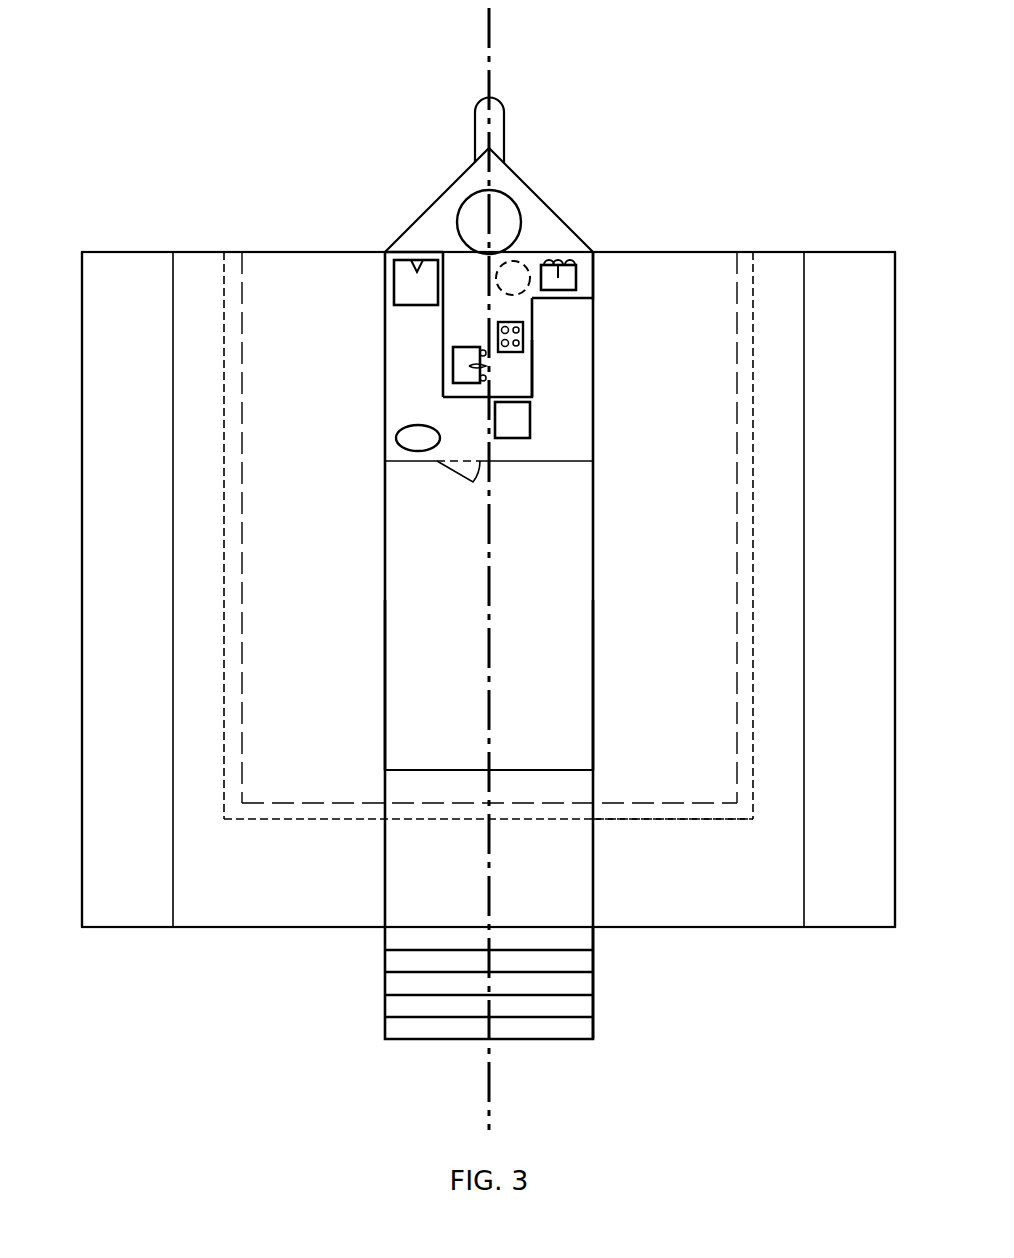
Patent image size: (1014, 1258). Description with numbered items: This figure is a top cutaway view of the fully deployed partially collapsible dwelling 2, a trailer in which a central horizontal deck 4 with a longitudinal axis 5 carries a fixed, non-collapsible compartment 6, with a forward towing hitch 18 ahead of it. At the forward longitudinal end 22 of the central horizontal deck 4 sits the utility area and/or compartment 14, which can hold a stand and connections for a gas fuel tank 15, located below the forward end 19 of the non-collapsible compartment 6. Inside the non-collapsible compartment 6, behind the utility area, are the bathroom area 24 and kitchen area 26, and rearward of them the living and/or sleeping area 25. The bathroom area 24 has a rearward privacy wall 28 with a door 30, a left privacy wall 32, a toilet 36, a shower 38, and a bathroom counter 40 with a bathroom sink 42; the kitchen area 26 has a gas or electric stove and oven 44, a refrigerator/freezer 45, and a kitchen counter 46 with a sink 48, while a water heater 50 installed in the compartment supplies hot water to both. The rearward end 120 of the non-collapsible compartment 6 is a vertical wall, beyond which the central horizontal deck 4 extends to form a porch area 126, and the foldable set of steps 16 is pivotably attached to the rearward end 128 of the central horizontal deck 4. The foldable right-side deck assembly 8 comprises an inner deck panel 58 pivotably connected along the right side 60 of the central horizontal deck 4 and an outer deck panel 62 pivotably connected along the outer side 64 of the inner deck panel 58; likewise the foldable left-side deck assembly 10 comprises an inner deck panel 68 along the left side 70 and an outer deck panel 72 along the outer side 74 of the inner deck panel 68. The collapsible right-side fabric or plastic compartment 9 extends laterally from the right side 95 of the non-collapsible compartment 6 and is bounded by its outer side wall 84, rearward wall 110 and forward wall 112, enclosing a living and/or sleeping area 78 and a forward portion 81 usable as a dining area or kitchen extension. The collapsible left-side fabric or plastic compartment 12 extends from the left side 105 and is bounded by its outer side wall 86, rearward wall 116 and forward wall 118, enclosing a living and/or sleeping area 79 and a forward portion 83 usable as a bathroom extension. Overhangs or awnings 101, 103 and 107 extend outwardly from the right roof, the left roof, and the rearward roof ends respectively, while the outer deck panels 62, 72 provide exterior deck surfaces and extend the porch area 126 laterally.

The partially collapsible dwelling 2 is at (774, 146).
The central horizontal deck 4 is at (540, 605).
The longitudinal axis 5 is at (487, 22).
The non-collapsible compartment 6 is at (385, 565).
The foldable right-side deck assembly 8 is at (895, 590).
The collapsible right-side fabric or plastic compartment 9 is at (737, 340).
The foldable left-side deck assembly 10 is at (82, 590).
The collapsible left-side fabric or plastic compartment 12 is at (242, 316).
The utility area and/or compartment 14 is at (521, 182).
The gas fuel tank 15 is at (458, 212).
The foldable set of steps 16 is at (385, 984).
The forward towing hitch 18 is at (504, 108).
The forward end of the non-collapsible compartment 19 is at (585, 251).
The forward longitudinal end 22 is at (405, 250).
The bathroom area 24 is at (416, 398).
The living and/or sleeping area 25 is at (593, 568).
The kitchen area 26 is at (538, 323).
The rearward privacy wall 28 is at (405, 461).
The door 30 is at (452, 478).
The left privacy wall 32 is at (385, 325).
The toilet 36 is at (396, 438).
The shower 38 is at (394, 286).
The bathroom counter 40 is at (443, 340).
The bathroom sink 42 is at (455, 372).
The gas or electric stove and oven 44 is at (523, 332).
The refrigerator/freezer 45 is at (512, 420).
The kitchen counter 46 is at (523, 386).
The sink 48 is at (577, 280).
The water heater 50 is at (525, 266).
The inner deck panel 58 is at (692, 928).
The right side 60 is at (593, 712).
The outer deck panel 62 is at (862, 928).
The outer side 64 is at (805, 790).
The inner deck panel 68 is at (285, 928).
The left side 70 is at (385, 696).
The outer deck panel 72 is at (128, 928).
The outer side 74 is at (173, 745).
The living and/or sleeping area 78 is at (672, 632).
The living and/or sleeping area 79 is at (311, 636).
The forward portion of the right-side compartment 81 is at (672, 468).
The forward portion of the left-side compartment 83 is at (293, 392).
The collapsible outer side wall 84 is at (753, 468).
The collapsible outer side wall 86 is at (224, 530).
The right side of the non-collapsible compartment 95 is at (598, 798).
The overhang or awning 101 is at (737, 695).
The overhang or awning 103 is at (242, 683).
The left side of the non-collapsible compartment 105 is at (382, 798).
The overhang or awning 107 is at (355, 820).
The rearward wall 110 is at (665, 820).
The forward wall 112 is at (686, 250).
The rearward wall 116 is at (285, 804).
The forward wall 118 is at (290, 250).
The rearward end of the non-collapsible compartment 120 is at (470, 772).
The porch area 126 is at (537, 877).
The rearward end of the central horizontal deck 128 is at (583, 928).